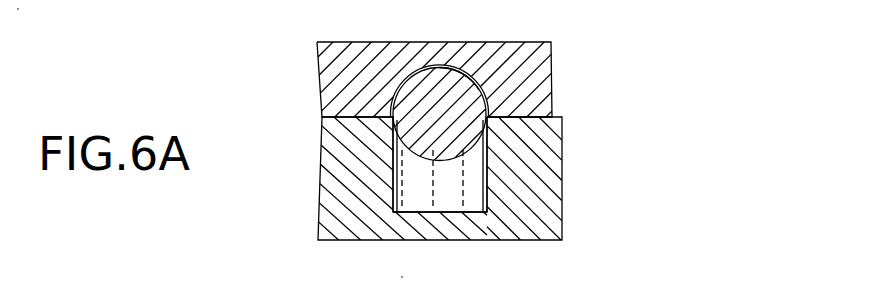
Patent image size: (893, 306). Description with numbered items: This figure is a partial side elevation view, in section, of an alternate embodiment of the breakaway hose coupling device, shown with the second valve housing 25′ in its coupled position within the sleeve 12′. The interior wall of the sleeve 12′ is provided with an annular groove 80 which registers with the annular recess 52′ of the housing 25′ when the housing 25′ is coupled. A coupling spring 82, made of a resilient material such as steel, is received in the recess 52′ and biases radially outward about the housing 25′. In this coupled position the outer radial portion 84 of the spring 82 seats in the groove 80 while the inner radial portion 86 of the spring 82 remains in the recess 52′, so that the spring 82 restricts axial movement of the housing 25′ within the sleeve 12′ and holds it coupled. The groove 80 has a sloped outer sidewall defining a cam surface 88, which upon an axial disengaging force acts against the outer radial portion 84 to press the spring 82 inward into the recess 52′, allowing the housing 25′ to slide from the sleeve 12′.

The sleeve 12′ is at (503, 42).
The second valve housing 25′ is at (495, 240).
The annular groove 80 is at (415, 72).
The coupling spring 82 is at (412, 102).
The outer radial portion 84 is at (460, 72).
The cam surface 88 is at (493, 107).
The annular recess 52′ is at (488, 178).
The inner radial portion 86 is at (457, 160).